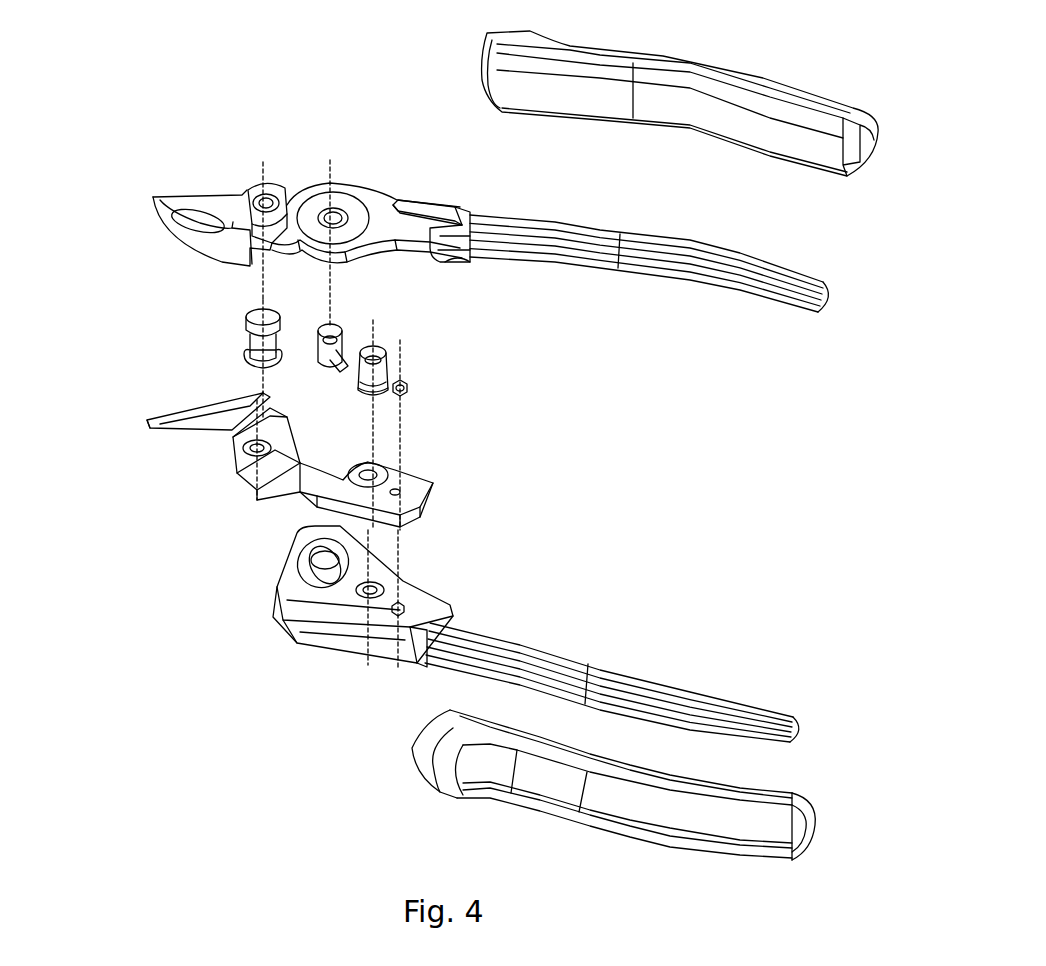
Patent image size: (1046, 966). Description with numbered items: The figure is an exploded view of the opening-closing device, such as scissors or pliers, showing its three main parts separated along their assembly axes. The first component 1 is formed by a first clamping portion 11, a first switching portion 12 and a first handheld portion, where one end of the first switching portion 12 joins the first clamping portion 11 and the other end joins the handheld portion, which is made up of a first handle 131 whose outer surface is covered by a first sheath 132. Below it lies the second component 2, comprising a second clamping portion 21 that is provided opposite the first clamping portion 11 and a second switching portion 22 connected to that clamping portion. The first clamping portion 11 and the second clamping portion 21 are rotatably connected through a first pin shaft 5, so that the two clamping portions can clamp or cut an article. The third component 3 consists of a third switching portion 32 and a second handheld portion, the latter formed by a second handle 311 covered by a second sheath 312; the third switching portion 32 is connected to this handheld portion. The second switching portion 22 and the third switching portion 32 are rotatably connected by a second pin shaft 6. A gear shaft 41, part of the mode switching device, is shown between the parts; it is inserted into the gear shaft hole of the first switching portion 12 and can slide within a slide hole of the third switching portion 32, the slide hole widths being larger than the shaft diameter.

The first component 1 is at (123, 202).
The first clamping portion 11 is at (205, 197).
The first switching portion 12 is at (363, 197).
The first handle 131 is at (690, 237).
The first sheath 132 is at (780, 100).
The second component 2 is at (123, 405).
The second clamping portion 21 is at (177, 403).
The second switching portion 22 is at (423, 477).
The third component 3 is at (195, 580).
The third switching portion 32 is at (280, 575).
The second handle 311 is at (707, 700).
The second sheath 312 is at (805, 795).
The first pin shaft 5 is at (246, 334).
The gear shaft 41 is at (340, 314).
The second pin shaft 6 is at (398, 345).